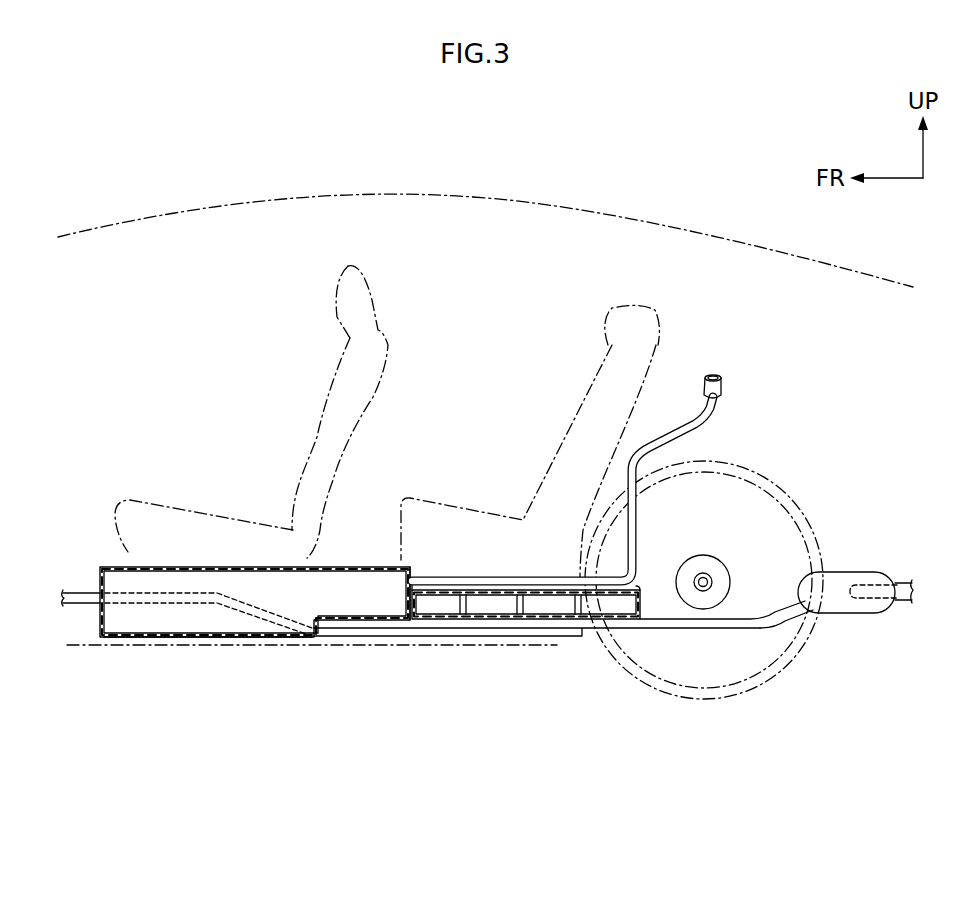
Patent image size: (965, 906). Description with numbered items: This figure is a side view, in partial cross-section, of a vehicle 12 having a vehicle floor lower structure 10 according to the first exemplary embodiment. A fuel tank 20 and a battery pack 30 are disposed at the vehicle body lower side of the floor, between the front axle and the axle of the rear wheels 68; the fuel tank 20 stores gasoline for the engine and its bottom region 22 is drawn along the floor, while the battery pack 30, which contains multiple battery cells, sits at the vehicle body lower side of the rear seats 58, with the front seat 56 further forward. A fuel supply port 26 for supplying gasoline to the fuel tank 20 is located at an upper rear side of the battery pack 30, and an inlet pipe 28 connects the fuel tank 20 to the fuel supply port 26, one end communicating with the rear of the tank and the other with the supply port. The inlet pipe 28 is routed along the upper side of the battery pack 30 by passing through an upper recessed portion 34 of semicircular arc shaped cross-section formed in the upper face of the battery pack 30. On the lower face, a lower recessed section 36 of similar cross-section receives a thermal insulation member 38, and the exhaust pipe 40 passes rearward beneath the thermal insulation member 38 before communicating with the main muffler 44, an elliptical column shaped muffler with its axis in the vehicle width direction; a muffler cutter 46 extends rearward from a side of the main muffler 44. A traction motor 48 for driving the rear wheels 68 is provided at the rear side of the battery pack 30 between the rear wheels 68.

The vehicle floor lower structure 10 is at (121, 671).
The vehicle 12 is at (489, 195).
The fuel tank 20 is at (100, 562).
The bottom wall 22 is at (208, 639).
The fuel supply port 26 is at (722, 390).
The inlet pipe 28 is at (662, 428).
The battery pack 30 is at (646, 583).
The upper recessed portion 34 is at (478, 577).
The lower recessed section 36 is at (558, 623).
The thermal insulation member 38 is at (482, 623).
The exhaust pipe 40 is at (358, 630).
The main muffler 44 is at (843, 572).
The muffler cutter 46 is at (903, 602).
The traction motor 48 is at (716, 556).
The front seat 56 is at (335, 292).
The rear seats 58 is at (600, 314).
The rear wheels 68 is at (737, 696).